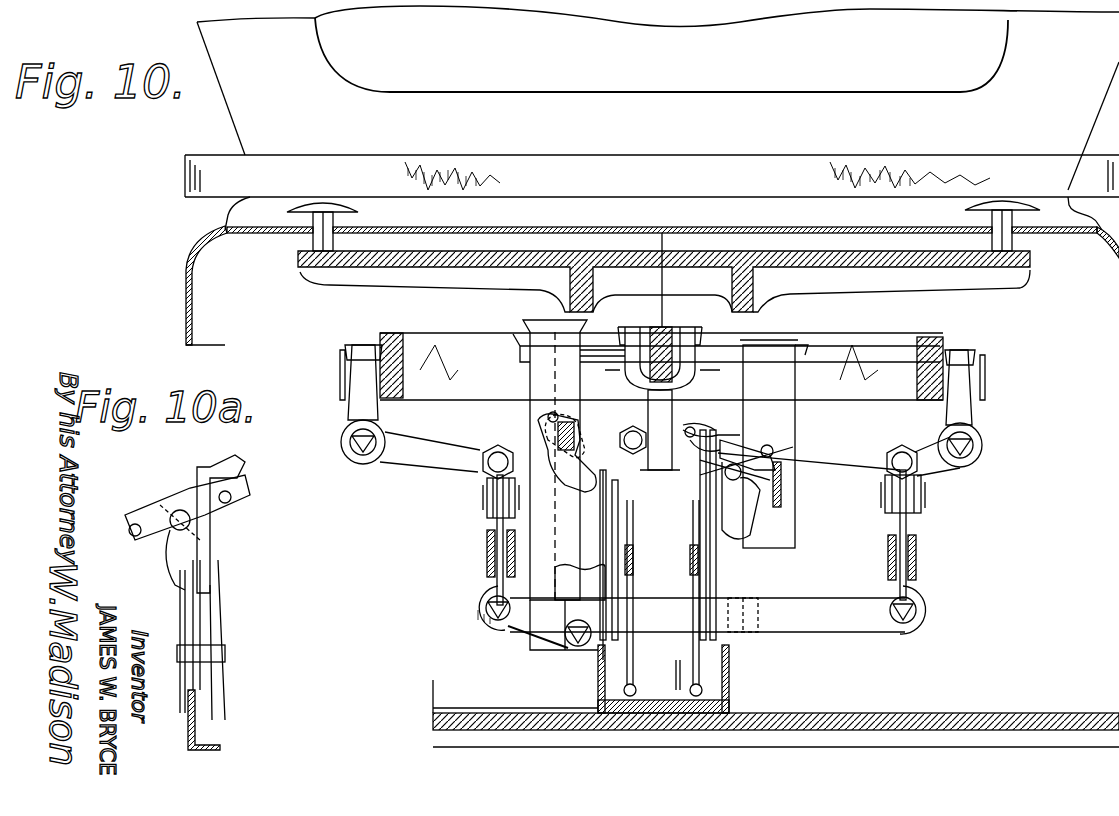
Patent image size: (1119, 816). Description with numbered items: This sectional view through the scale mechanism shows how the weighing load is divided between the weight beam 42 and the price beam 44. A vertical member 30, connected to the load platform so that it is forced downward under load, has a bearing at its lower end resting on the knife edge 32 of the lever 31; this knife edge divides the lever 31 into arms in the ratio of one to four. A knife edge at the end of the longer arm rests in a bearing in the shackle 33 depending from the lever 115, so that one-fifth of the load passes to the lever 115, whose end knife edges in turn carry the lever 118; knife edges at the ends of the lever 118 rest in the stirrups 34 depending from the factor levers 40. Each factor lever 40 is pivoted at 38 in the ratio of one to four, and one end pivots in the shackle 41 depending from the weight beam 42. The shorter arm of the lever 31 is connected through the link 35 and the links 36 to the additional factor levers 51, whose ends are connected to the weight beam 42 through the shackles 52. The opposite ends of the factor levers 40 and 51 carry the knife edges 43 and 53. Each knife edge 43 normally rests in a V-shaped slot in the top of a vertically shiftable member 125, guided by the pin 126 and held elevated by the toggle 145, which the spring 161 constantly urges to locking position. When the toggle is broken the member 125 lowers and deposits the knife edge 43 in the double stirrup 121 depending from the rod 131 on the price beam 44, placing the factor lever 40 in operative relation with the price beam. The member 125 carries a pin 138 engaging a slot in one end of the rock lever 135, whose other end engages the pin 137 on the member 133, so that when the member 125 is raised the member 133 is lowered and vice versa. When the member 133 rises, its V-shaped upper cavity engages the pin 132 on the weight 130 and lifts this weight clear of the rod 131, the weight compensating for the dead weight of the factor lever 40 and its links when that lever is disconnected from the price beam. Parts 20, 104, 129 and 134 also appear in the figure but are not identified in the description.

In FIG. 10, the keyboard base board 20 is at (528, 166).
In FIG. 10, the fastening screw 104 is at (345, 214).
In FIG. 10, the weight beam 42 is at (392, 345).
In FIG. 10, the rod 131 is at (740, 355).
In FIG. 10, the vertical member 30 is at (598, 325).
In FIG. 10, the price beam 44 is at (662, 330).
In FIG. 10, the knife edge 53 is at (662, 455).
In FIG. 10, the double stirrup 121 is at (685, 381).
In FIG. 10, the weight 130 is at (795, 378).
In FIG. 10, the shackle 52 is at (360, 396).
In FIG. 10, the shackle 41 is at (965, 400).
In FIG. 10, the factor lever 51 is at (428, 458).
In FIG. 10, the link 36 is at (485, 485).
In FIG. 10, the link 35 is at (478, 594).
In FIG. 10, the lever 31 is at (815, 630).
In FIG. 10, the knife edge 32 is at (578, 647).
In FIG. 10, the shackle 33 is at (925, 585).
In FIG. 10, the lever 115 is at (918, 575).
In FIG. 10, the lever 118 is at (920, 510).
In FIG. 10, the pivot point 38 is at (912, 470).
In FIG. 10, the stirrup 34 is at (930, 480).
In FIG. 10, the factor lever 40 is at (870, 465).
In FIG. 10, the pivot stud 129 is at (620, 436).
In FIG. 10, the pin 137 is at (545, 438).
In FIG. 10A, the pin 137 is at (128, 532).
In FIG. 10, the knife edge 43 is at (695, 430).
In FIG. 10, the vertically shiftable member 125 is at (700, 440).
In FIG. 10A, the vertically shiftable member 125 is at (215, 472).
In FIG. 10, the rock lever 135 is at (770, 440).
In FIG. 10A, the rock lever 135 is at (225, 520).
In FIG. 10, the pin 132 is at (775, 451).
In FIG. 10, the vertically reciprocable member 133 is at (790, 465).
In FIG. 10A, the vertically reciprocable member 133 is at (140, 520).
In FIG. 10, the pawl 134 is at (760, 500).
In FIG. 10, the pin 138 is at (622, 508).
In FIG. 10A, the pin 138 is at (232, 495).
In FIG. 10, the toggle 145 is at (692, 555).
In FIG. 10, the spring 161 is at (690, 688).
In FIG. 10, the pin 126 is at (745, 634).
In FIG. 10A, the pin 126 is at (228, 655).